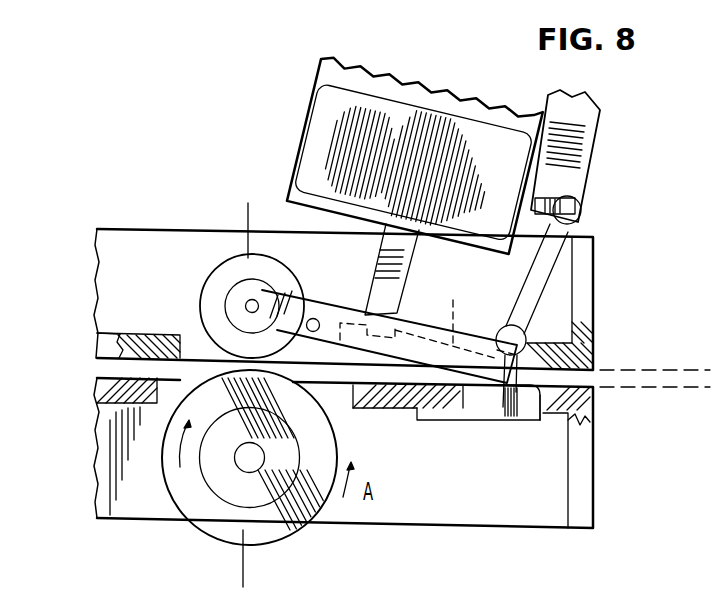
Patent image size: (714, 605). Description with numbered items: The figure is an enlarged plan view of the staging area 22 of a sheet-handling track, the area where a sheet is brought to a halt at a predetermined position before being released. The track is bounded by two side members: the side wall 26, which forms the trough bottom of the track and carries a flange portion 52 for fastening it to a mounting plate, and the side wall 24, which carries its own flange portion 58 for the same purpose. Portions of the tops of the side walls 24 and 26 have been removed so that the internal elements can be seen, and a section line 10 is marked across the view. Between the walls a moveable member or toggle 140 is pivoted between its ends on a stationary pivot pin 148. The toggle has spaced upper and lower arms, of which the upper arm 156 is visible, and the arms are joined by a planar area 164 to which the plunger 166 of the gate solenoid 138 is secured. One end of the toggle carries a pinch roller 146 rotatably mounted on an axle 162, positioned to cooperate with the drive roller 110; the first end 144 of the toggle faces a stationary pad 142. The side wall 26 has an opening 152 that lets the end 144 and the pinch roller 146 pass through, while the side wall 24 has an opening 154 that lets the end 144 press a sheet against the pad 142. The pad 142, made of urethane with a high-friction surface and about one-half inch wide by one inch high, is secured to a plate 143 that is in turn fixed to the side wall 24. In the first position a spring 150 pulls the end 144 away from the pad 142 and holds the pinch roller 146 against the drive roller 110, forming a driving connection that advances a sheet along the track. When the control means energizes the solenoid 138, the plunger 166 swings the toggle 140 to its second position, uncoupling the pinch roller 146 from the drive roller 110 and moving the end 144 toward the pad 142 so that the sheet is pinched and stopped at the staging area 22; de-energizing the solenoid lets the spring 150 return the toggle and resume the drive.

The section line 10- 10 is at (284, 213).
The staging area 22 is at (614, 475).
The side wall 24 is at (103, 387).
The side wall 26 is at (107, 343).
The flange portion 52 is at (131, 229).
The flange portion 58 is at (458, 512).
The drive roller 110 is at (202, 520).
The gate solenoid 138 is at (322, 117).
The toggle 140 is at (353, 300).
The pad 142 is at (476, 400).
The plate 143 is at (417, 415).
The first end of toggle 144 is at (513, 357).
The pinch roller 146 is at (221, 270).
The pivot pin 148 is at (313, 318).
The spring 150 is at (546, 268).
The opening 152 is at (190, 338).
The opening 154 is at (541, 407).
The upper arm 156 is at (238, 300).
The axle 162 is at (253, 312).
The planar area 164 is at (457, 300).
The plunger 166 is at (410, 266).